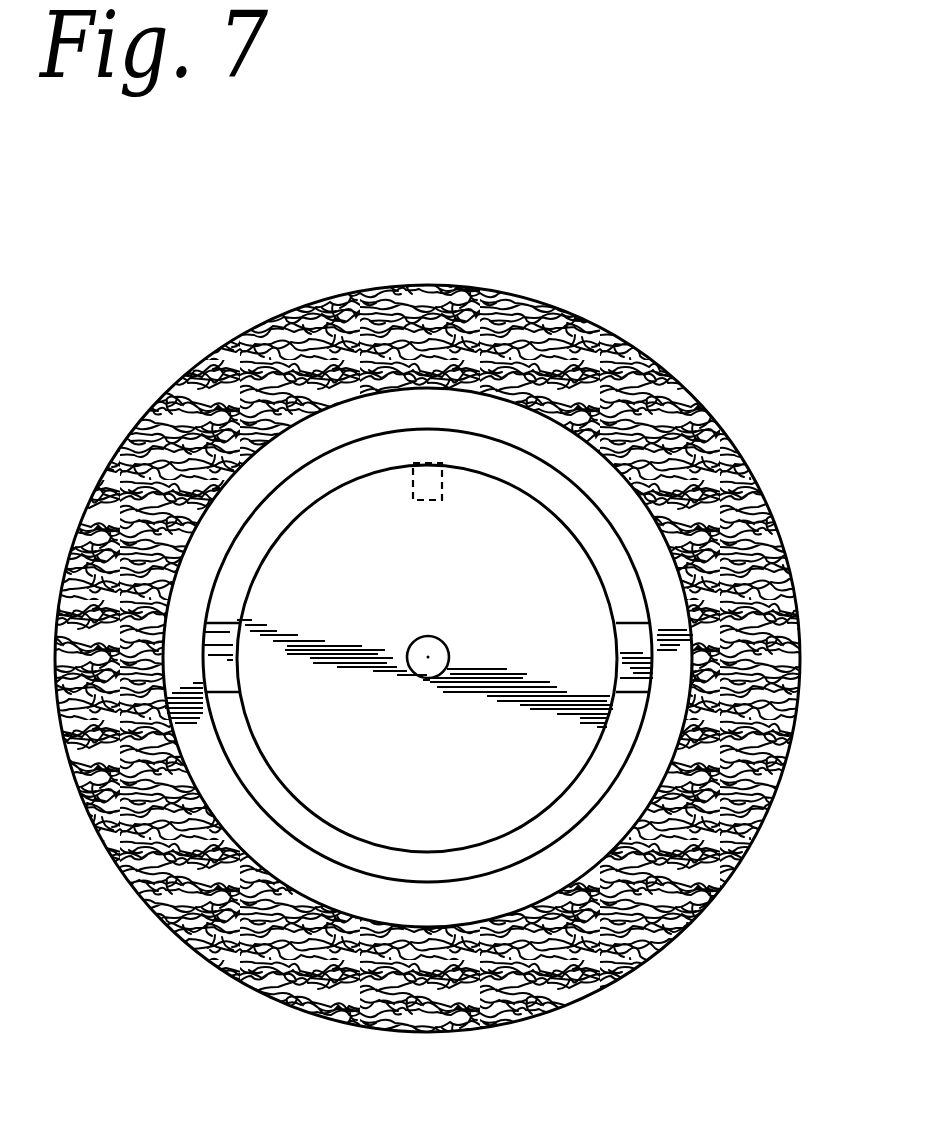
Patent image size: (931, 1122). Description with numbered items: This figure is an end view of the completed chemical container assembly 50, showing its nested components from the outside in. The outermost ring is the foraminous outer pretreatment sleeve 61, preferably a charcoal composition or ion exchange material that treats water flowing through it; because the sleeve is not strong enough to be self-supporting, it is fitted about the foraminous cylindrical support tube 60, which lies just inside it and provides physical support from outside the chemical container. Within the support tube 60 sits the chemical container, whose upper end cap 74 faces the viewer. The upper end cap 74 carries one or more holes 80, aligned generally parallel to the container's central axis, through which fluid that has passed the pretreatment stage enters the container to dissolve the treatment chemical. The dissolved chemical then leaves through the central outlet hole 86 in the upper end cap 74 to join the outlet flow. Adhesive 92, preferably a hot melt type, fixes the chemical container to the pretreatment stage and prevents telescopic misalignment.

The chemical container assembly 50 is at (593, 272).
The outer pretreatment sleeve 61 is at (220, 352).
The support tube 60 is at (335, 427).
The upper end cap 74 is at (312, 795).
The holes 80 is at (428, 463).
The outlet hole 86 is at (428, 636).
The adhesive 92 is at (230, 670).